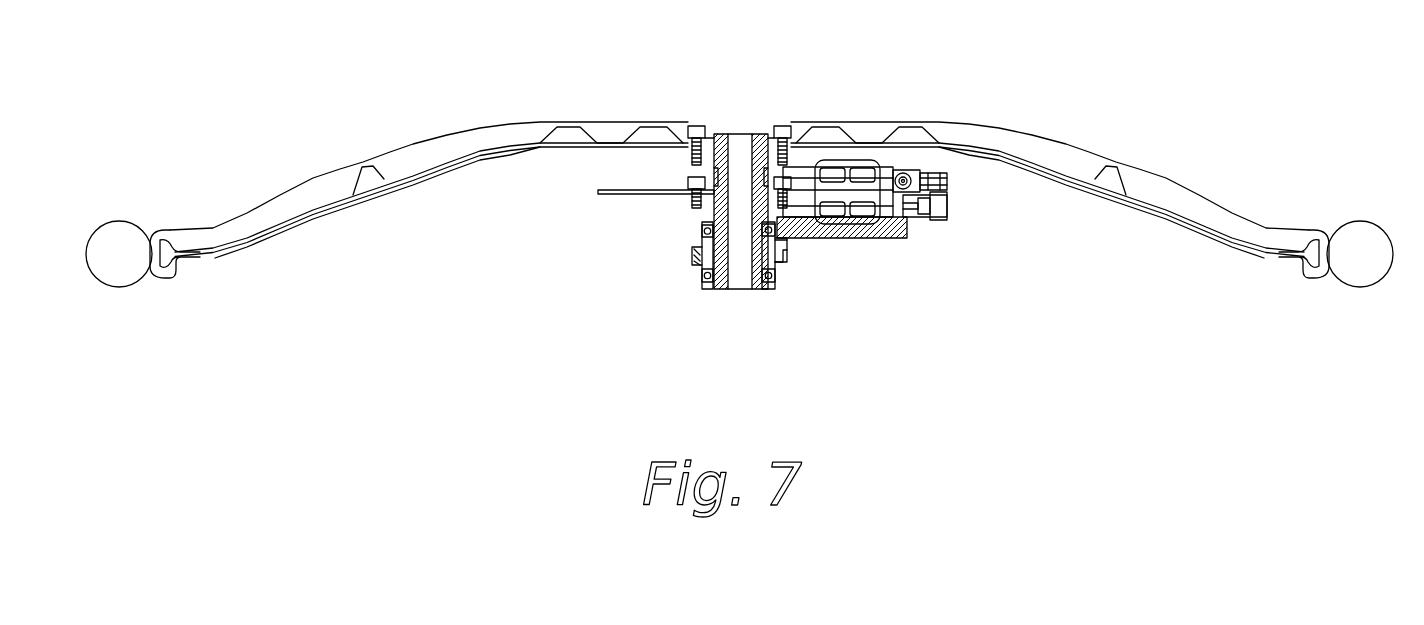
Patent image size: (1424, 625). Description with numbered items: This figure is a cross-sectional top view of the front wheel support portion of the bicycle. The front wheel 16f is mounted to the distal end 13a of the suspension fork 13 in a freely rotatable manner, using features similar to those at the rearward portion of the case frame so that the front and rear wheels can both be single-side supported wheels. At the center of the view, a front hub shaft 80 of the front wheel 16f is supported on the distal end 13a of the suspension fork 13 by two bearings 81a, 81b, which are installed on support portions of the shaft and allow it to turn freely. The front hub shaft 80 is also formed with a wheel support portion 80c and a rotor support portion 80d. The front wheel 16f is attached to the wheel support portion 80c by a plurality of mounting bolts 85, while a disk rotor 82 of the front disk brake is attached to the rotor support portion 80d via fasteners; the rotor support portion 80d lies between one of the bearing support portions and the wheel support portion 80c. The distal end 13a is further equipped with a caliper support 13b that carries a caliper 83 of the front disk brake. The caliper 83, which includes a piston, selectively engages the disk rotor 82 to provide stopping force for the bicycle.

The suspension fork 13 is at (788, 272).
The distal end 13a is at (784, 248).
The caliper support 13b is at (908, 228).
The front wheel 16f is at (1358, 224).
The front hub shaft 80 is at (722, 290).
The wheel support portion 80c is at (707, 127).
The rotor support portion 80d is at (689, 202).
The bearing 81a is at (701, 223).
The bearing 81b is at (701, 272).
The disk rotor 82 is at (643, 189).
The caliper 83 is at (948, 183).
The mounting bolts 85 is at (781, 127).